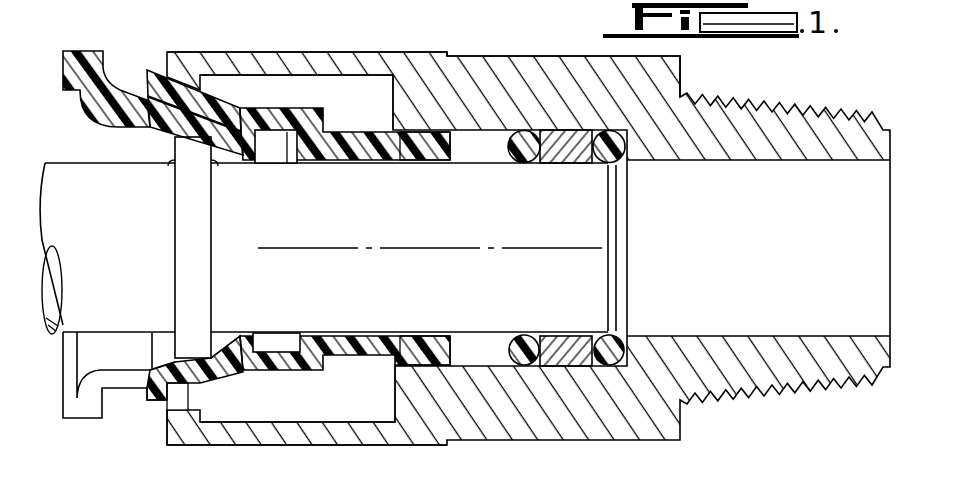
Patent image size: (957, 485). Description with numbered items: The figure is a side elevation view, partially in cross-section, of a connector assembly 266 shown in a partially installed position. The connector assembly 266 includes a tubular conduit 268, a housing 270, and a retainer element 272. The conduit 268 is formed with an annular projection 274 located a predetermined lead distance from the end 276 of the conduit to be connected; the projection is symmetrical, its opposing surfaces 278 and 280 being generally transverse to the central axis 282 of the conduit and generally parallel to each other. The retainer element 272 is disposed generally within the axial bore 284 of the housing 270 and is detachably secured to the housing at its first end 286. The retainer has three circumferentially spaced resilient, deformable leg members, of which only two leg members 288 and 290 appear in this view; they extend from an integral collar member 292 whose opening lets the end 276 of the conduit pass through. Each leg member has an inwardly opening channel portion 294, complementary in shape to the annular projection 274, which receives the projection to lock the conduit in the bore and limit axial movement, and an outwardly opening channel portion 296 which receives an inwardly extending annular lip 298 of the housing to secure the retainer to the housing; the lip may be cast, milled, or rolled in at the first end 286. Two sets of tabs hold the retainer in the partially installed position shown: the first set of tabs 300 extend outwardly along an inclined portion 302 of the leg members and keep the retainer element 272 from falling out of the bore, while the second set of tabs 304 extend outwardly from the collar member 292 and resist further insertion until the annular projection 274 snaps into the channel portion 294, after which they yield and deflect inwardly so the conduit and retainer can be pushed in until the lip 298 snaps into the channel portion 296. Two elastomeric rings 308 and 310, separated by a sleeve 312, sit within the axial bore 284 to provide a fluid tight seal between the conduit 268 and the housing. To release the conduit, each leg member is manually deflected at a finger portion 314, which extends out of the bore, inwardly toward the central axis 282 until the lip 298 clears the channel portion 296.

The connector assembly 266 is at (388, 40).
The tubular conduit 268 is at (52, 187).
The housing 270 is at (537, 75).
The retainer element 272 is at (346, 142).
The annular projection 274 is at (190, 228).
The end of the conduit 276 is at (630, 264).
The opposing surface of the projection 278 is at (168, 160).
The opposing surface of the projection 280 is at (214, 155).
The central axis 282 is at (451, 258).
The axial bore 284 is at (335, 415).
The first end of the housing 286 is at (180, 436).
The leg member 288 is at (358, 132).
The leg member 290 is at (358, 350).
The collar member 292 is at (444, 338).
The inwardly opening channel portion 294 is at (285, 168).
The outwardly opening channel portion 296 is at (128, 90).
The annular lip 298 is at (200, 410).
The first set of tabs 300 is at (205, 95).
The inclined portion 302 is at (167, 130).
The second set of tabs 304 is at (400, 130).
The elastomeric ring 308 is at (522, 160).
The elastomeric ring 310 is at (598, 165).
The sleeve 312 is at (566, 340).
The finger portion 314 is at (78, 22).